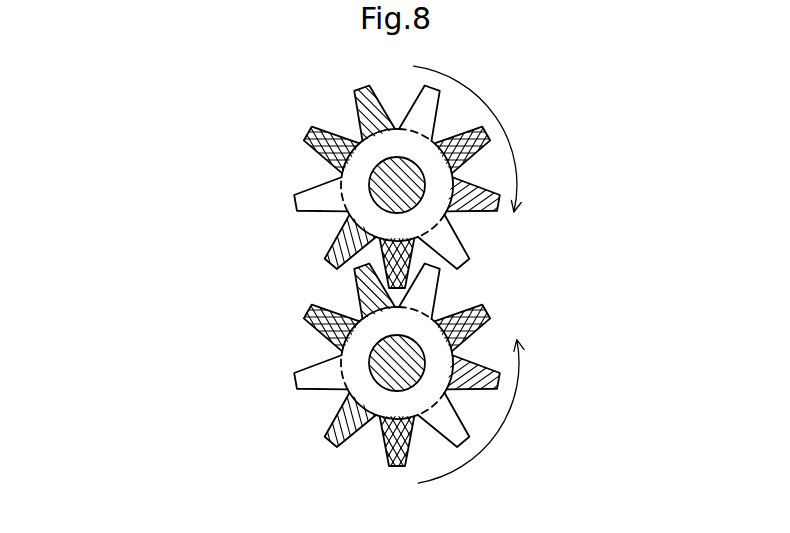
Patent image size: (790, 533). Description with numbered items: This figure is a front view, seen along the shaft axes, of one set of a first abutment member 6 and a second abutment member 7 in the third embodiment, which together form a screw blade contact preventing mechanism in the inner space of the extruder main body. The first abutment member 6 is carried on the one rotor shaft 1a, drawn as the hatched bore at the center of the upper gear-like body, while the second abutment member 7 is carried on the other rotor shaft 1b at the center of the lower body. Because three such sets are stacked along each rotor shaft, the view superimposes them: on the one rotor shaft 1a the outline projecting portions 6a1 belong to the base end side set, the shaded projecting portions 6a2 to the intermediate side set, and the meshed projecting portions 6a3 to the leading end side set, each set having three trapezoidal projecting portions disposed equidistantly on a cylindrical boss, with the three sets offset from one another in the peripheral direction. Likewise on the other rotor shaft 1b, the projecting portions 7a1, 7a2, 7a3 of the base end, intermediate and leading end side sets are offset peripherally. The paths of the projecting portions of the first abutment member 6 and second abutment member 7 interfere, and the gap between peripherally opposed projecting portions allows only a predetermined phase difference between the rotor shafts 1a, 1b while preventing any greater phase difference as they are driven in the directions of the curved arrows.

The first abutment member 6 is at (159, 100).
The second abutment member 7 is at (313, 445).
The projecting portions of base end side set (first abutment member) 6a1 is at (440, 117).
The projecting portions of intermediate side set (first abutment member) 6a2 is at (368, 106).
The projecting portions of leading end side set (first abutment member) 6a3 is at (322, 146).
The projecting portions of base end side set (second abutment member) 7a1 is at (470, 444).
The projecting portions of intermediate side set (second abutment member) 7a2 is at (497, 386).
The projecting portions of leading end side set (second abutment member) 7a3 is at (482, 314).
The one rotor shaft 1a is at (368, 203).
The other rotor shaft 1b is at (375, 346).